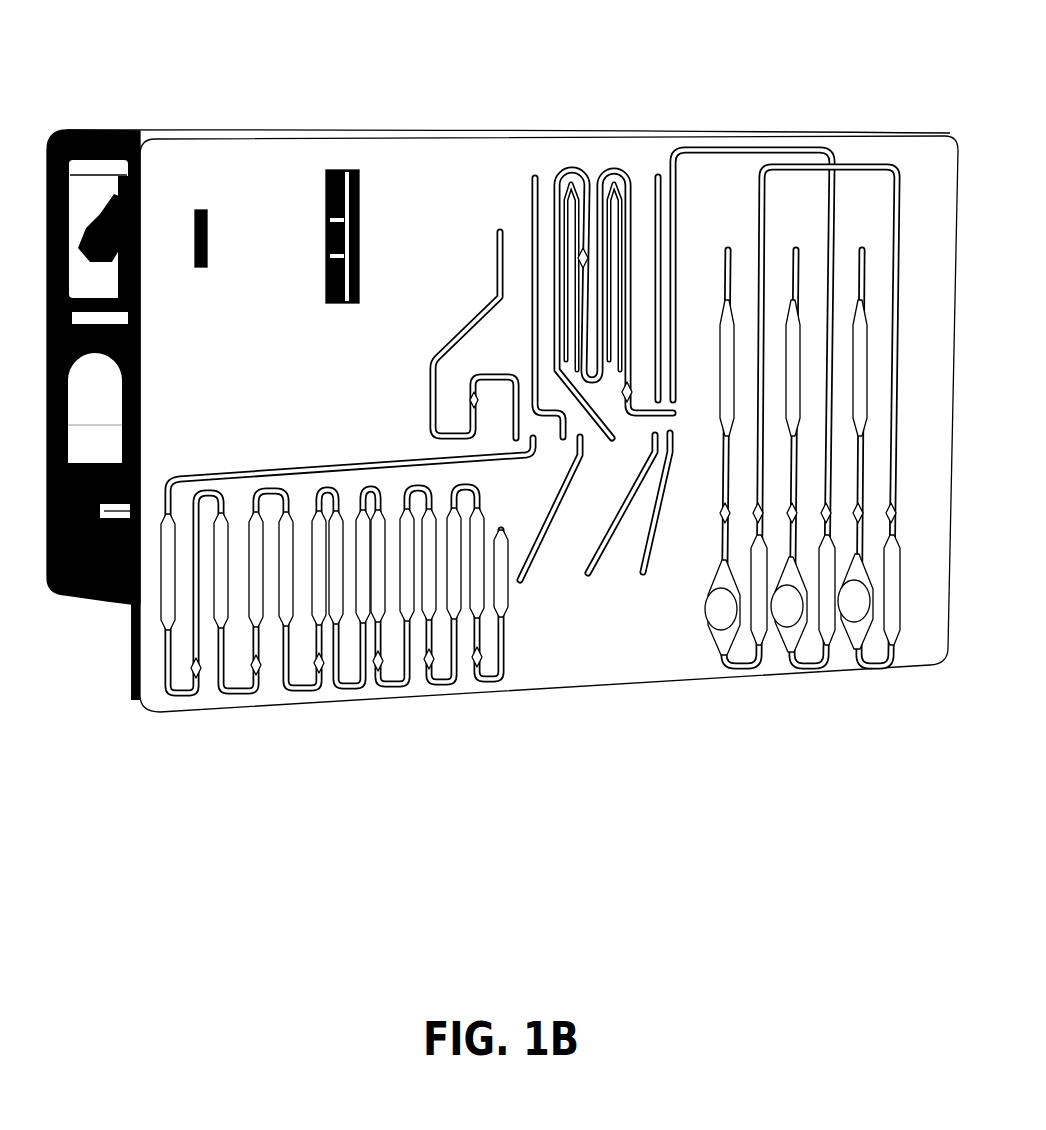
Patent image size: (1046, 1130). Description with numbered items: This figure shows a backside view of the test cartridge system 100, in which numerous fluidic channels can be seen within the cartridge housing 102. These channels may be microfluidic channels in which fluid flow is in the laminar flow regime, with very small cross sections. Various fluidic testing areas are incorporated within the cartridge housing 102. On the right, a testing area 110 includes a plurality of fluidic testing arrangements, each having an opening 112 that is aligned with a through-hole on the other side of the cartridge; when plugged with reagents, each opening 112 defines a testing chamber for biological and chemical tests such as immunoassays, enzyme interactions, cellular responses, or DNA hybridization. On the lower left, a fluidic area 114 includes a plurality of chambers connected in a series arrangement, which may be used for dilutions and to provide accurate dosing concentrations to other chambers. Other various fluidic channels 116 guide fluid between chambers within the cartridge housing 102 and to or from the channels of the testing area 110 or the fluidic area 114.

The test cartridge system 100 is at (222, 42).
The cartridge housing 102 is at (458, 156).
The testing area 110 is at (830, 685).
The opening 112 is at (700, 598).
The fluidic area 114 is at (347, 717).
The fluidic channels 116 is at (620, 110).